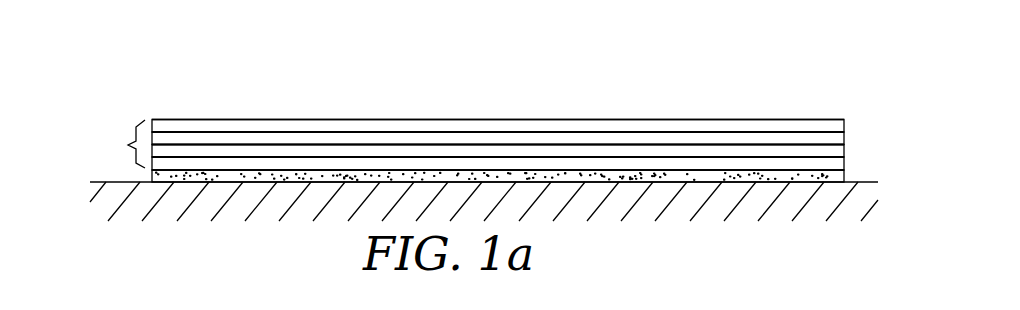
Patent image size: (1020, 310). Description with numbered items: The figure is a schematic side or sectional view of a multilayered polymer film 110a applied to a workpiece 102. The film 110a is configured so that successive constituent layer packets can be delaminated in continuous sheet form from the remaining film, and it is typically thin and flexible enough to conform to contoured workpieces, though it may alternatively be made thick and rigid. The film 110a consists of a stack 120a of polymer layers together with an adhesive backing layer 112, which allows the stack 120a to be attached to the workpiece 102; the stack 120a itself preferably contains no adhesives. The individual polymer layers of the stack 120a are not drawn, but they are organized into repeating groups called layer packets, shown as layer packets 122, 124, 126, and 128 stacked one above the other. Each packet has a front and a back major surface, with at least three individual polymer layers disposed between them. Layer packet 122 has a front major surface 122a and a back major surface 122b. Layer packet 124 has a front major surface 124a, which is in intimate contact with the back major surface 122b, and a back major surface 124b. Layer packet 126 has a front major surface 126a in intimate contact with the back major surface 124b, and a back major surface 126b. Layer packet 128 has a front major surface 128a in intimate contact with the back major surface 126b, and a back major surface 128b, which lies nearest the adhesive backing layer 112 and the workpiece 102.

The workpiece 102 is at (110, 182).
The film 110a is at (135, 31).
The adhesive backing layer 112 is at (152, 177).
The stack 120a is at (129, 146).
The layer packet 122 is at (768, 128).
The front major surface 122a is at (788, 120).
The back major surface 122b is at (752, 132).
The layer packet 124 is at (600, 140).
The front major surface 124a is at (618, 132).
The back major surface 124b is at (582, 144).
The layer packet 126 is at (427, 152).
The front major surface 126a is at (440, 144).
The back major surface 126b is at (408, 157).
The layer packet 128 is at (257, 165).
The front major surface 128a is at (273, 157).
The back major surface 128b is at (247, 170).